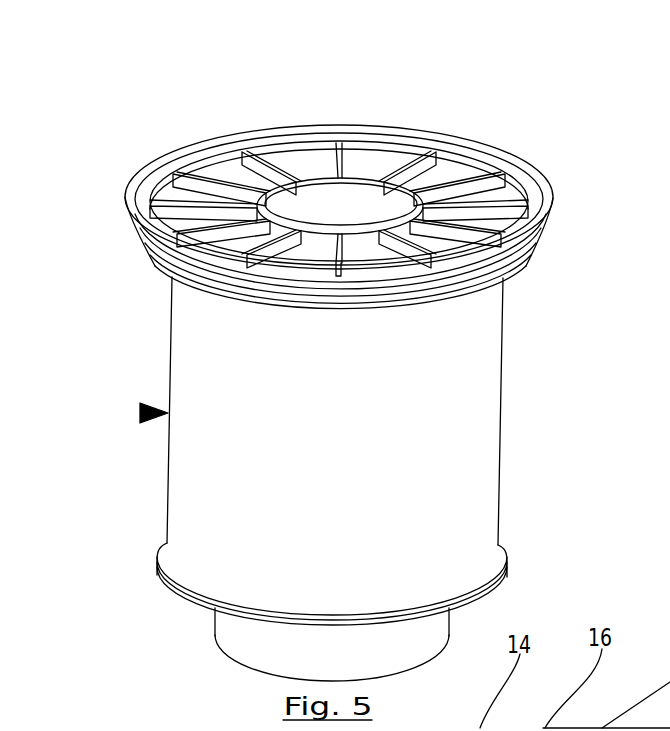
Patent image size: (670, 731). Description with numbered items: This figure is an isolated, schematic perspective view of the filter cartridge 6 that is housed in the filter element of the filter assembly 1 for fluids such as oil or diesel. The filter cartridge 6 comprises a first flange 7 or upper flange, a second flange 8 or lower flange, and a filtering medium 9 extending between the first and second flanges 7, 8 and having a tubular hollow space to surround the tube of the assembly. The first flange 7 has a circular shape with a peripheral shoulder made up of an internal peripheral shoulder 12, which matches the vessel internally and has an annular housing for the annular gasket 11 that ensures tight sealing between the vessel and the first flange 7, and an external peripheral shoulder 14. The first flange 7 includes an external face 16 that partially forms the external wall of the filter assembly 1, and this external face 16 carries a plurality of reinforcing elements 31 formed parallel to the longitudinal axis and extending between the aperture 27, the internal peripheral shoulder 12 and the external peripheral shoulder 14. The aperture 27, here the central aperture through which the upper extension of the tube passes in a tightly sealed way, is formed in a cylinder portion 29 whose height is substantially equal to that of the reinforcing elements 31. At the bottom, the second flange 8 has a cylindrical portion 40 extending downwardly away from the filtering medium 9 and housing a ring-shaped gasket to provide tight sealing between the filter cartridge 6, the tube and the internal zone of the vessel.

The filter assembly 1 is at (535, 261).
The filter cartridge 6 is at (142, 412).
The first flange 7 is at (545, 211).
The second flange 8 is at (175, 587).
The filtering medium 9 is at (447, 437).
The gasket 11 is at (483, 286).
The internal peripheral shoulder 12 is at (145, 252).
The external peripheral shoulder 14 is at (133, 214).
The external face 16 is at (470, 185).
The aperture 27 is at (357, 217).
The cylinder portion 29 is at (336, 192).
The reinforcing elements 31 is at (200, 178).
The cylindrical portion 40 is at (215, 637).